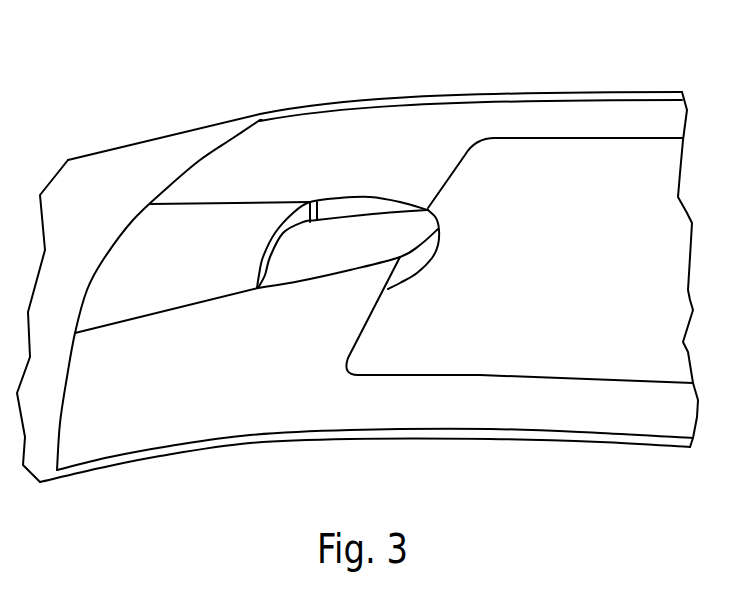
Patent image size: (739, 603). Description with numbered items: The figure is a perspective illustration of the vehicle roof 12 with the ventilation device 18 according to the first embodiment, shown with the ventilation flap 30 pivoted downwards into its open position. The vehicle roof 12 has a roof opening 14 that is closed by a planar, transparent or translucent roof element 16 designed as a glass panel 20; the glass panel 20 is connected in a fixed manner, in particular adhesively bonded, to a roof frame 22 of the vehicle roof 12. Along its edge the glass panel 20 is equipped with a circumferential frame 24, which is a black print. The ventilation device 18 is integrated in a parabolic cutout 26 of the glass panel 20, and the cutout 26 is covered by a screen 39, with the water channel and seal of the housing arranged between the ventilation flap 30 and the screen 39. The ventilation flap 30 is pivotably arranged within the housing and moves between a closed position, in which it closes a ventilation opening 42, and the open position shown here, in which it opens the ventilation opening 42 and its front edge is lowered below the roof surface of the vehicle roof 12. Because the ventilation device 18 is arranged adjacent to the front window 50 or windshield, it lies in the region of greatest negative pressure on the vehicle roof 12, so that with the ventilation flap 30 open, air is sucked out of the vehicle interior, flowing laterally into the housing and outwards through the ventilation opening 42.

The vehicle roof 12 is at (592, 58).
The roof opening 14 is at (513, 112).
The planar, transparent or translucent roof element 16 is at (553, 360).
The ventilation device 18 is at (373, 157).
The glass panel 20 is at (420, 362).
The roof frame 22 is at (647, 97).
The circumferential frame 24 is at (337, 408).
The parabolic cutout 26 is at (292, 285).
The ventilation flap 30 is at (333, 230).
The screen 39 is at (168, 223).
The ventilation opening 42 is at (293, 203).
The front window 50 is at (93, 168).